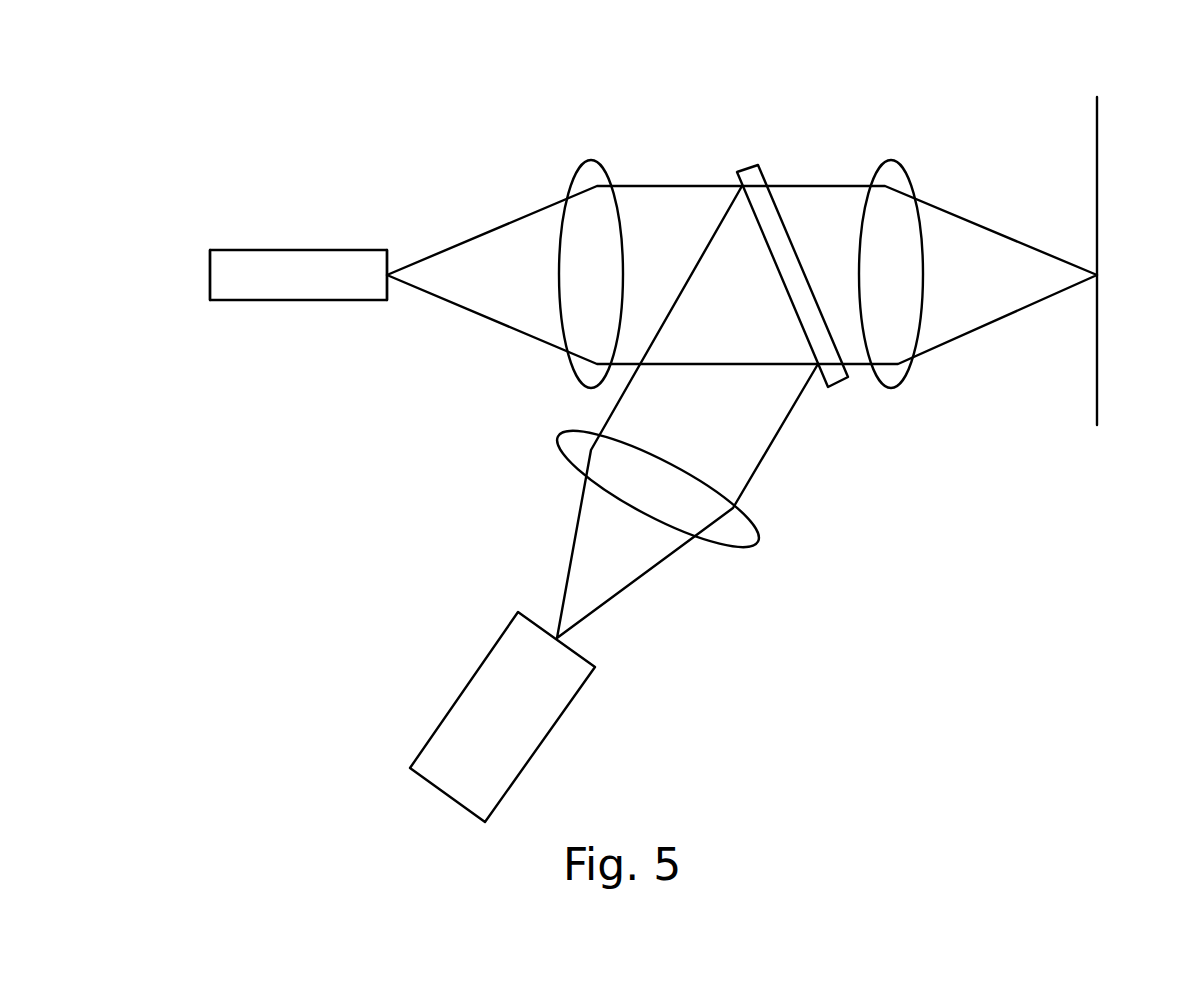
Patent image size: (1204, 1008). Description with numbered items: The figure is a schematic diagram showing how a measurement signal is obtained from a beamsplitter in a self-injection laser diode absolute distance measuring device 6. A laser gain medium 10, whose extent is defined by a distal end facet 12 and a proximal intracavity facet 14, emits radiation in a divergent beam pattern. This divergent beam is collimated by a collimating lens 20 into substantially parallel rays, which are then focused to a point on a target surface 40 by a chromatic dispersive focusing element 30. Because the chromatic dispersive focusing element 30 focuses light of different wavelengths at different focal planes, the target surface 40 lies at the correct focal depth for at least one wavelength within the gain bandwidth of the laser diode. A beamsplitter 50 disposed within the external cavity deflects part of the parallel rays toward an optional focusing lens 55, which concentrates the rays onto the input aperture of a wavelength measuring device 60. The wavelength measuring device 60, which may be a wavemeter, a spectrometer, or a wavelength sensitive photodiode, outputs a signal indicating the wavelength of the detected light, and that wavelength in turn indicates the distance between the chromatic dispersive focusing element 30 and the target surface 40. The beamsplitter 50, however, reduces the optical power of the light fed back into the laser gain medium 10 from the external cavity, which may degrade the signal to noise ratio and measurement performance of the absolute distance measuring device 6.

The absolute distance measuring device 6 is at (897, 95).
The laser gain medium 10 is at (270, 250).
The distal end facet 12 is at (210, 267).
The proximal intracavity facet 14 is at (390, 250).
The collimating lens 20 is at (575, 175).
The chromatic dispersive focusing element 30 is at (875, 175).
The target surface 40 is at (1097, 175).
The beamsplitter 50 is at (843, 382).
The focusing lens 55 is at (748, 555).
The wavelength measuring device 60 is at (538, 717).